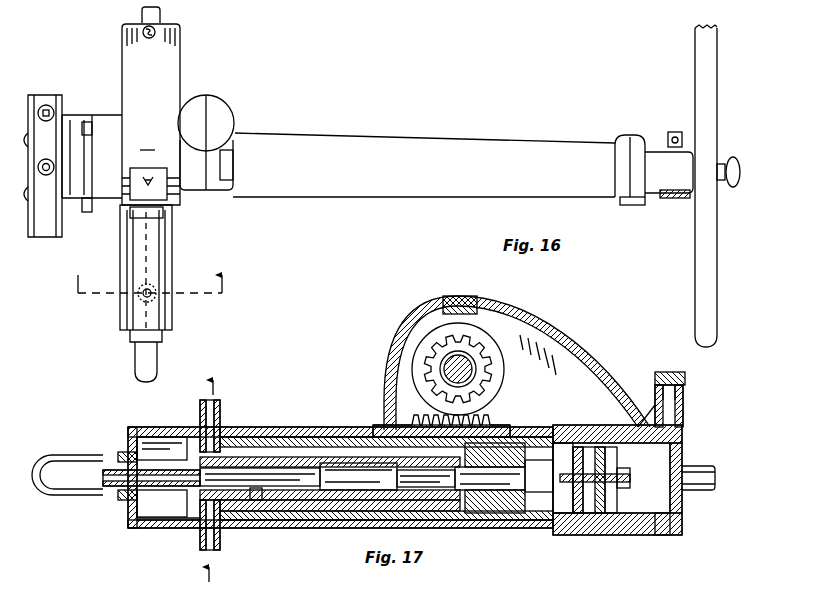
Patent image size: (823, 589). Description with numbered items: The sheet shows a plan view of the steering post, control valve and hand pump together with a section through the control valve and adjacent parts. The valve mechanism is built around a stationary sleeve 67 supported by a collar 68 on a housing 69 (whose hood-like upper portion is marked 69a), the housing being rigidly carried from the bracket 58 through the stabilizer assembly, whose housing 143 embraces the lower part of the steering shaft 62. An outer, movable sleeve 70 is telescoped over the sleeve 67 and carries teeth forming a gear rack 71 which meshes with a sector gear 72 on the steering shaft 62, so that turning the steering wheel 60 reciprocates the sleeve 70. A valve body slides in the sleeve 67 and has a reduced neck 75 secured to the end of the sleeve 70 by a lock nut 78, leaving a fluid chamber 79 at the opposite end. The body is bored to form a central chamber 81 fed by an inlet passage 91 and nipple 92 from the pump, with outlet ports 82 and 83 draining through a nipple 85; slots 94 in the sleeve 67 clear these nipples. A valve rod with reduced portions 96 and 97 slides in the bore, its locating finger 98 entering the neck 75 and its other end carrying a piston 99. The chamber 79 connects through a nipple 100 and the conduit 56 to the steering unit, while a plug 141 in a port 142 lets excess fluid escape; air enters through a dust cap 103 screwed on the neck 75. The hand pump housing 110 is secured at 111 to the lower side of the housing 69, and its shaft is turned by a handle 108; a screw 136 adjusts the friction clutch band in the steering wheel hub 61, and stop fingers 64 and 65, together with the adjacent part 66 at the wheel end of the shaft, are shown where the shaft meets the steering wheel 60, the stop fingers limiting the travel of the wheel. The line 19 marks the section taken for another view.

In FIG. 16, the conduit 56 is at (141, 13).
In FIG. 16, the housing 69 is at (164, 81).
In FIG. 16, the pump housing 110 is at (63, 150).
In FIG. 16, the securing point 111 is at (88, 122).
In FIG. 16, the stabilizer housing 143 is at (232, 113).
In FIG. 16, the bracket 58 is at (375, 148).
In FIG. 16, the outer movable sleeve 70 is at (165, 284).
In FIG. 17, the outer movable sleeve 70 is at (162, 528).
In FIG. 16, the nipple 85 is at (139, 298).
In FIG. 17, the nipple 85 is at (220, 416).
In FIG. 16, the section line 19 is at (156, 292).
In FIG. 16, the lock nut 78 is at (130, 340).
In FIG. 16, the dust cap 103 is at (148, 366).
In FIG. 17, the dust cap 103 is at (50, 460).
In FIG. 16, the stop finger 65 is at (634, 135).
In FIG. 16, the nut 66 is at (637, 173).
In FIG. 16, the steering wheel hub 61 is at (663, 199).
In FIG. 16, the stop finger 64 is at (636, 206).
In FIG. 16, the adjustment screw 136 is at (675, 132).
In FIG. 16, the steering wheel 60 is at (713, 139).
In FIG. 16, the handle 108 is at (723, 181).
In FIG. 17, the locating finger 98 is at (80, 507).
In FIG. 17, the tubular neck portion 75 is at (103, 473).
In FIG. 17, the nipple 92 is at (203, 549).
In FIG. 17, the slots 94 is at (258, 433).
In FIG. 17, the reduced diameter portion 96 is at (286, 465).
In FIG. 17, the inlet passage 91 is at (305, 505).
In FIG. 17, the fluid outlet port 82 is at (256, 492).
In FIG. 17, the central chamber 81 is at (343, 463).
In FIG. 17, the reduced diameter portion 97 is at (425, 492).
In FIG. 17, the fluid outlet port 83 is at (462, 497).
In FIG. 17, the collar 68 is at (636, 535).
In FIG. 17, the stationary sleeve 67 is at (553, 527).
In FIG. 17, the chamber 79 is at (664, 537).
In FIG. 17, the piston 99 is at (618, 500).
In FIG. 17, the nipple 100 is at (703, 468).
In FIG. 17, the port 142 is at (683, 411).
In FIG. 17, the plug 141 is at (672, 372).
In FIG. 17, the hood 69a is at (598, 352).
In FIG. 17, the gear rack 71 is at (496, 426).
In FIG. 17, the sector gear 72 is at (490, 379).
In FIG. 17, the steering shaft 62 is at (470, 356).